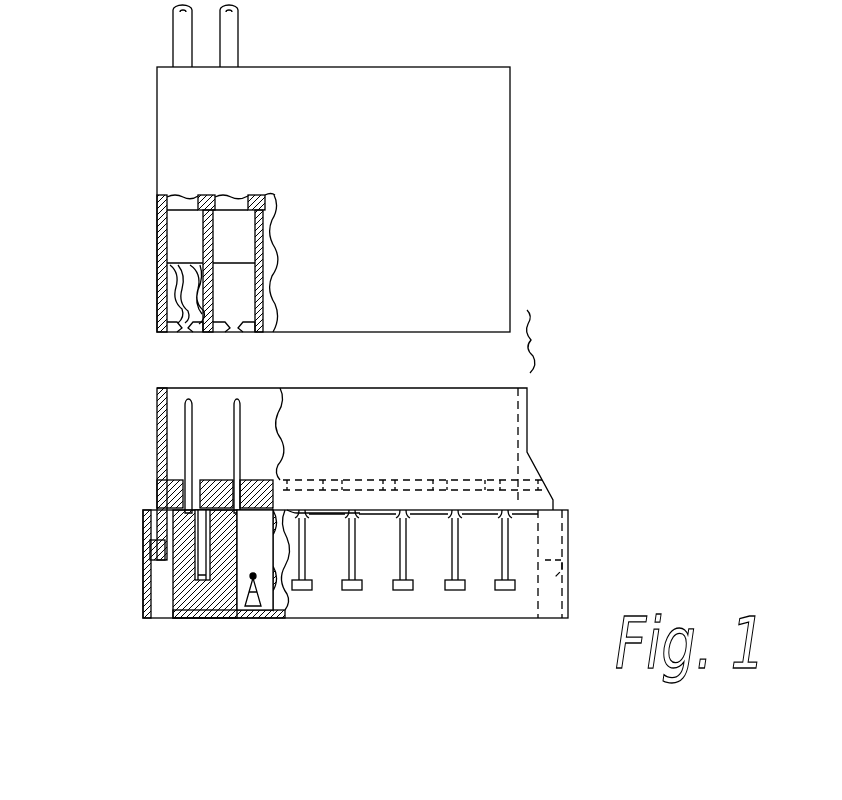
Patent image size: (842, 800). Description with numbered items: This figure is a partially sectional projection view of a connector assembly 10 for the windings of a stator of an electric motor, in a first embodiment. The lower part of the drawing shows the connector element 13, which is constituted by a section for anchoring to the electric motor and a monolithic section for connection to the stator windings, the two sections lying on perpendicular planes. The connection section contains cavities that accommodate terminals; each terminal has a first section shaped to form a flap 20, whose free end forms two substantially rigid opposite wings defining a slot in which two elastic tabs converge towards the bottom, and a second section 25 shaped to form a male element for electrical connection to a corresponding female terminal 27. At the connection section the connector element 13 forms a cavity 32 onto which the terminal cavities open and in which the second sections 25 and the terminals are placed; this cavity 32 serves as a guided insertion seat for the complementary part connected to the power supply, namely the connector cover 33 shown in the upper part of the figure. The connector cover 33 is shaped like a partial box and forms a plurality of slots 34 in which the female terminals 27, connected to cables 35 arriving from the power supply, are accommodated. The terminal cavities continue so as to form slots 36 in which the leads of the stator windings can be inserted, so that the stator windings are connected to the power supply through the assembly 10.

The connector assembly 10 is at (549, 437).
The connector element 13 is at (495, 623).
The flap 20 is at (312, 547).
The second section 25 is at (183, 430).
The female terminal 27 is at (175, 230).
The cavity 32 is at (215, 455).
The connector cover 33 is at (490, 185).
The slots 34 is at (230, 294).
The cables 35 is at (178, 27).
The slots 36 is at (407, 543).